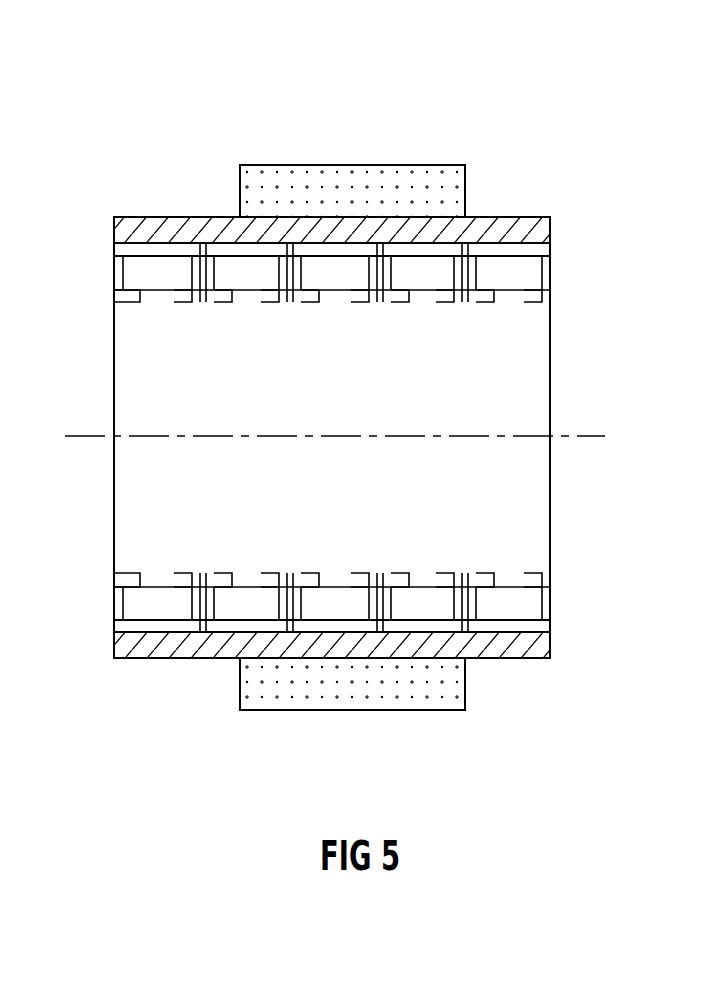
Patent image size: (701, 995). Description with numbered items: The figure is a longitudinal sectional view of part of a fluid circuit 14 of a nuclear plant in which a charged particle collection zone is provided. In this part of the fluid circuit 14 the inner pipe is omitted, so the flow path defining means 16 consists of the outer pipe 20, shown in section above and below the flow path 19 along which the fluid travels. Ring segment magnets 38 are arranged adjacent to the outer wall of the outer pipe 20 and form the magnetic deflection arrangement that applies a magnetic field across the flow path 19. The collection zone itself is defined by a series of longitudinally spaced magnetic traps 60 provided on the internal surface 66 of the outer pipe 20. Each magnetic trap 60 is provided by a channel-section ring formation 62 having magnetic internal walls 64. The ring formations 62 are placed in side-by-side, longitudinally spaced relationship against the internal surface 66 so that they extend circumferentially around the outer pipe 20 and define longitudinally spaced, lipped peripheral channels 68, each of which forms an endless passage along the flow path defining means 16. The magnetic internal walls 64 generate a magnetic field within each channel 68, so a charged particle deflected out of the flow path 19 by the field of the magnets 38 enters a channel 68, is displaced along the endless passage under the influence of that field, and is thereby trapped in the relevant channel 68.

The fluid circuit 14 is at (268, 125).
The flow path defining means 16 is at (552, 229).
The flow path 19 is at (200, 452).
The outer pipe 20 is at (114, 222).
The ring segment magnet 38 is at (323, 178).
The magnetic trap 60 is at (240, 250).
The channel-section ring formation 62 is at (114, 278).
The magnetic internal wall 64 is at (196, 268).
The internal surface 66 is at (118, 253).
The peripheral channel 68 is at (245, 268).